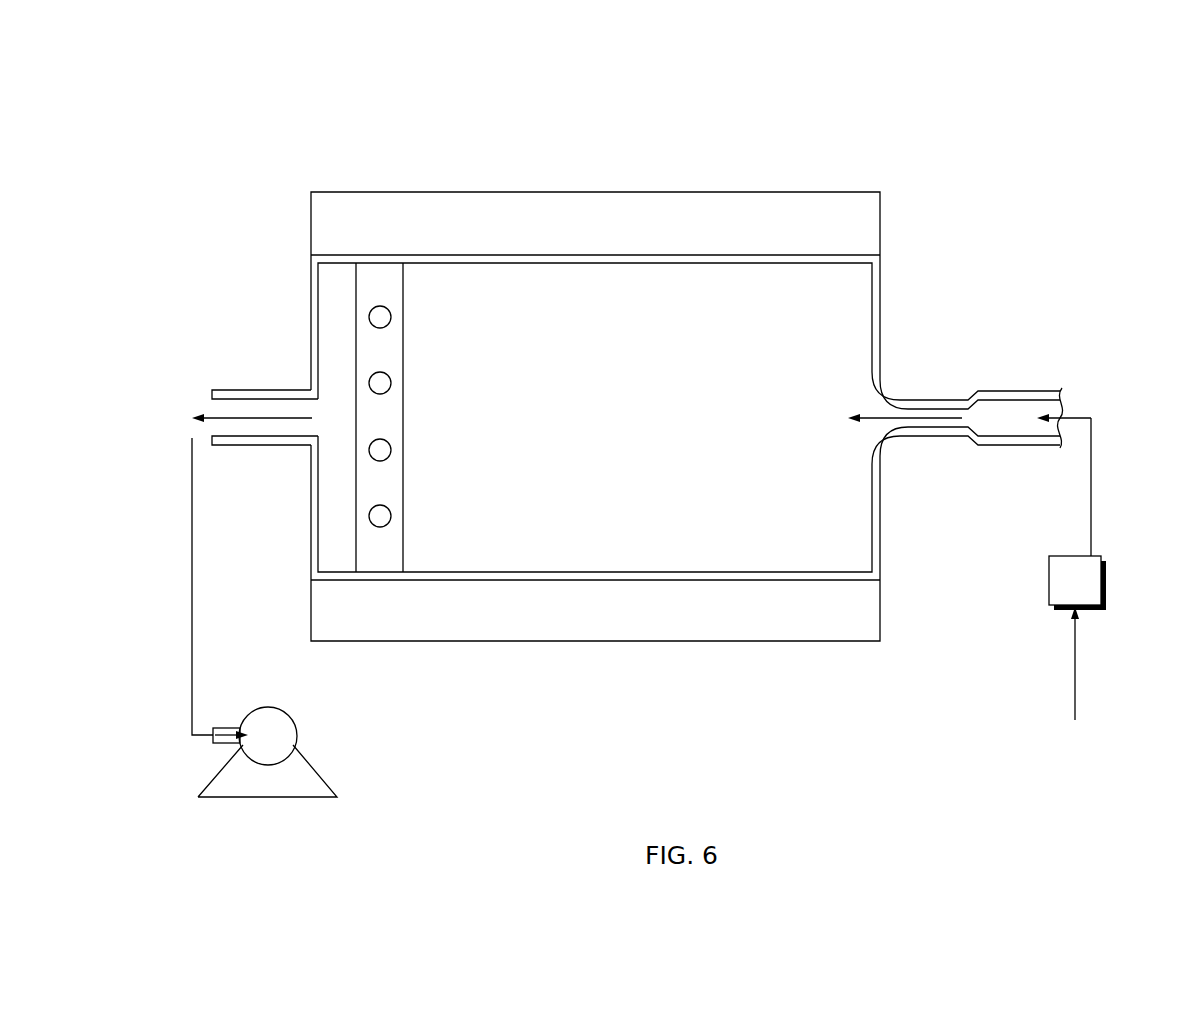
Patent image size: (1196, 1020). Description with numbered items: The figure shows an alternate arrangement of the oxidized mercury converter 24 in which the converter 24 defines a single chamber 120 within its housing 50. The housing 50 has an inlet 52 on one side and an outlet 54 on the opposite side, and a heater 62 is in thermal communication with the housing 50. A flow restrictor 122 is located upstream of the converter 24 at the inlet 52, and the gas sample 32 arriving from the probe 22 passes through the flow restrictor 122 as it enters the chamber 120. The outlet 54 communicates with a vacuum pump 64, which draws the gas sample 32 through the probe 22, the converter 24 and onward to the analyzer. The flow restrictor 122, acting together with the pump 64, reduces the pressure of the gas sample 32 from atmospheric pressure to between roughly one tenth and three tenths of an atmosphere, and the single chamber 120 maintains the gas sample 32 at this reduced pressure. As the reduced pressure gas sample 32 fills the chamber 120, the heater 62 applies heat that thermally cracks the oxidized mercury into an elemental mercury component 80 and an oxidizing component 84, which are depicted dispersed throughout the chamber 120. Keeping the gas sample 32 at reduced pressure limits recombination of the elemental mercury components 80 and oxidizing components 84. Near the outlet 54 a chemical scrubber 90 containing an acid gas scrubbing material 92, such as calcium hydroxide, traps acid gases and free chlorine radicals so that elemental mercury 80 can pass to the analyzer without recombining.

The converter 24 is at (876, 92).
The heater 62 is at (645, 183).
The single chamber 120 is at (472, 255).
The housing 50 is at (922, 270).
The inlet 52 is at (929, 370).
The flow restrictor 122 is at (930, 462).
The gas sample 32 is at (1092, 473).
The probe 22 is at (1065, 591).
The outlet 54 is at (258, 446).
The chemical scrubber 90 is at (372, 550).
The acid gas scrubbing material 92 is at (366, 494).
The vacuum pump 64 is at (257, 746).
The elemental mercury component 80 is at (724, 512).
The oxidizing component 84 is at (442, 558).